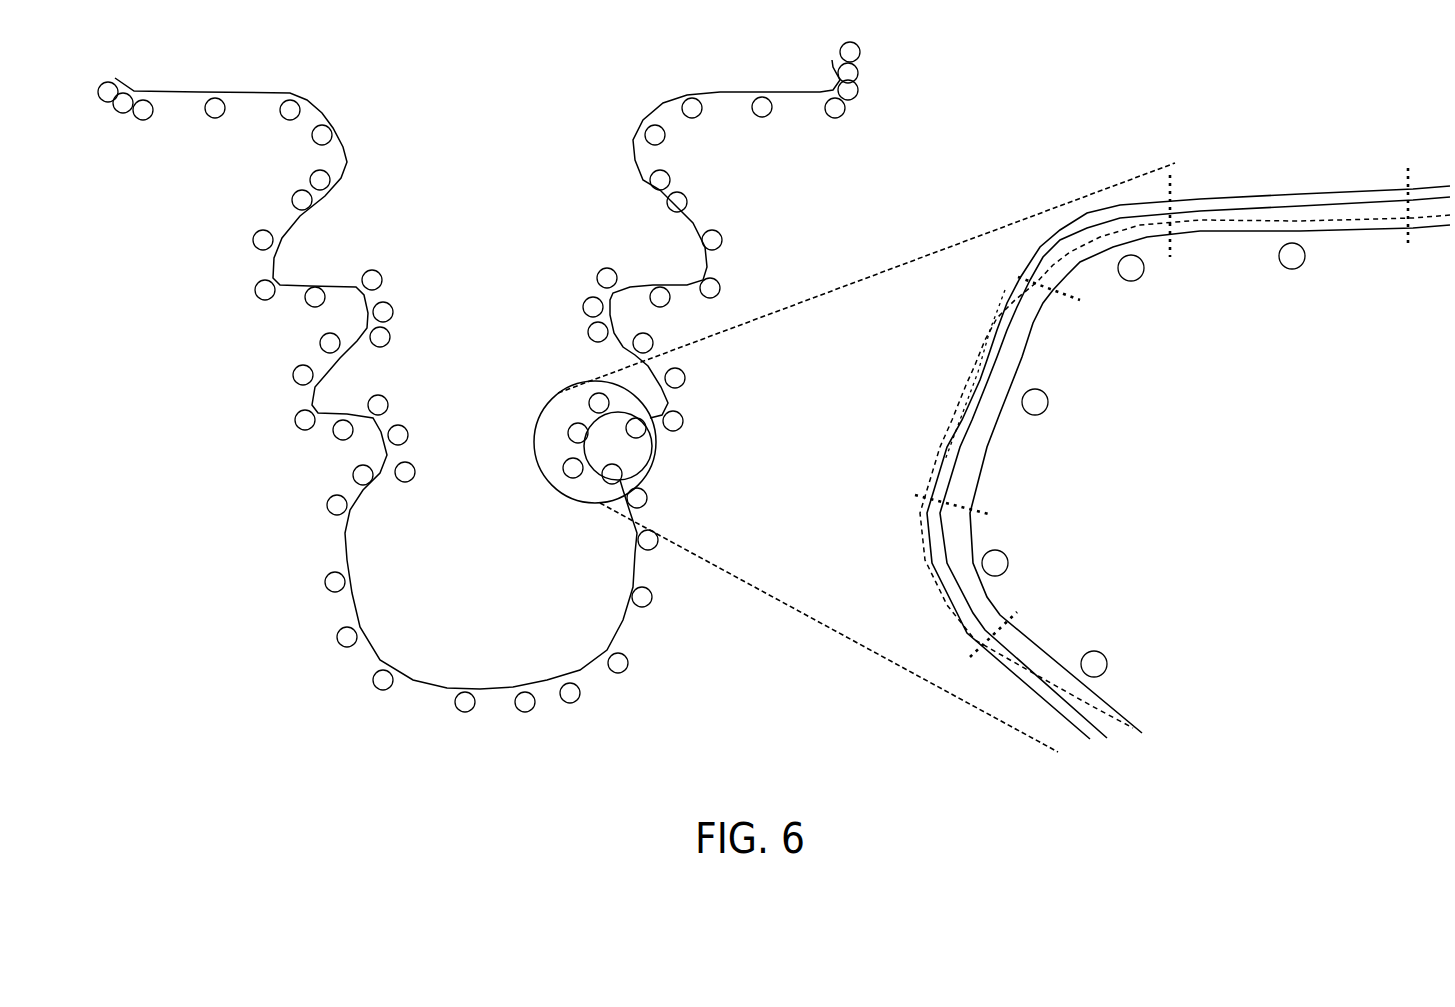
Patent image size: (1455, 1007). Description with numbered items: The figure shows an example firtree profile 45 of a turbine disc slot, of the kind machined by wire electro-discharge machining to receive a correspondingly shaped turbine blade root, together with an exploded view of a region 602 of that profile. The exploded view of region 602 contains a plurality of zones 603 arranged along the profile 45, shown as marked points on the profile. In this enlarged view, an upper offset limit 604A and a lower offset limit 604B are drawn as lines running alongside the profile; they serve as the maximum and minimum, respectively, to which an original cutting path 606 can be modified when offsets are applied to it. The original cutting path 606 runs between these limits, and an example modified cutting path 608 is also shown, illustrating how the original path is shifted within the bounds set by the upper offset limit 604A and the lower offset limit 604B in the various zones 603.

The firtree profile 45 is at (360, 166).
The region 602 is at (547, 392).
The zones 603 is at (1145, 268).
The upper offset limit 604A is at (1267, 195).
The lower offset limit 604B is at (1220, 233).
The original cutting path 606 is at (943, 410).
The modified cutting path 608 is at (978, 372).